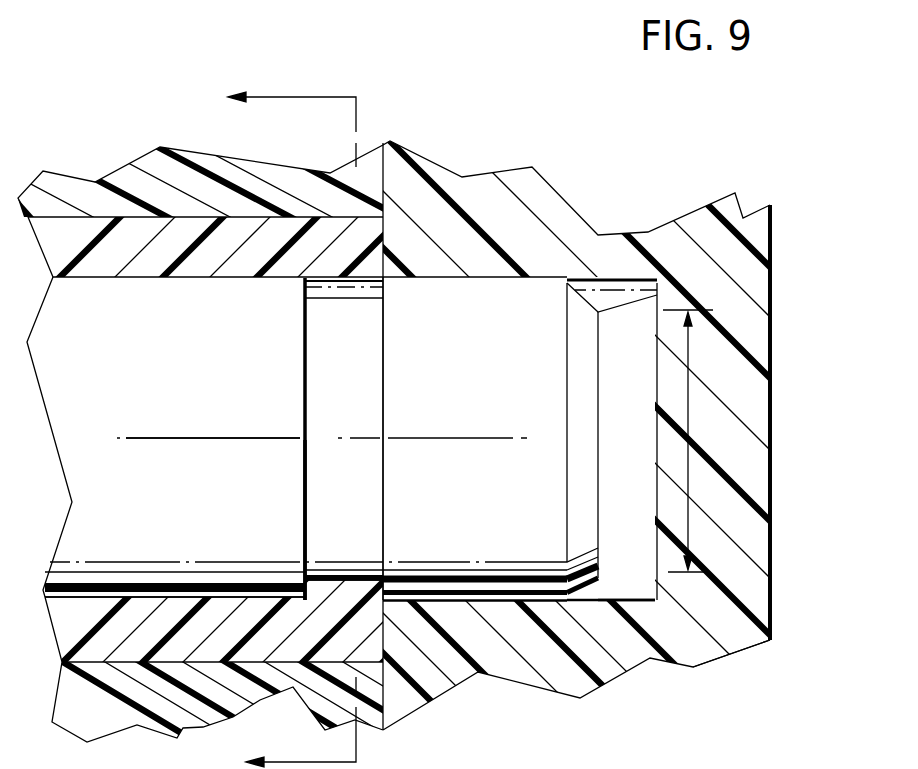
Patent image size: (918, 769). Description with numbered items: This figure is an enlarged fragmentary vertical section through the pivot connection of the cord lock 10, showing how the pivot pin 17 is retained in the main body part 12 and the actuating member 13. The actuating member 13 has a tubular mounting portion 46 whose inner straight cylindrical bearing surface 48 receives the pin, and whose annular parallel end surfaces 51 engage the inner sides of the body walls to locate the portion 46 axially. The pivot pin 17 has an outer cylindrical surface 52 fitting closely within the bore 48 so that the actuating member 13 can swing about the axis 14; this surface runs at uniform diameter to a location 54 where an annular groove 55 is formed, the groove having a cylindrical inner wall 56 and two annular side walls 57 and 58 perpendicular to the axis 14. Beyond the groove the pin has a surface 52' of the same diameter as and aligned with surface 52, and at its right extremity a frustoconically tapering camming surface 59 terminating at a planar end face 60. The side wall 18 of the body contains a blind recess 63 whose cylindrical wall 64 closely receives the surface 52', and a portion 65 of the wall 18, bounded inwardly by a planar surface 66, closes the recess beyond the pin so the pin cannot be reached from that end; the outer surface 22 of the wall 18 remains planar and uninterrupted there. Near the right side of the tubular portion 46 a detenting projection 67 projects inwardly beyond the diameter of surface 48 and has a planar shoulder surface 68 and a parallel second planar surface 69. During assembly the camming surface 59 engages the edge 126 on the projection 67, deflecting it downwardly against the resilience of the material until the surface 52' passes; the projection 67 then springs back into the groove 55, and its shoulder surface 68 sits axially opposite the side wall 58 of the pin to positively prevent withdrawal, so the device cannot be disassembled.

The cord lock 10 is at (292, 412).
The main body part 12 is at (778, 508).
The actuating member 13 is at (231, 214).
The axis 14 is at (170, 440).
The pivot pin 17 is at (205, 509).
The side wall 18 is at (750, 590).
The outer surface 22 is at (772, 565).
The tubular mounting portion 46 is at (107, 632).
The inner straight cylindrical bearing surface 48 is at (134, 218).
The end surfaces 51 is at (383, 227).
The outer cylindrical surface 52 is at (248, 236).
The surface 52' is at (475, 416).
The location 54 is at (300, 328).
The annular groove 55 is at (325, 428).
The inner wall 56 is at (337, 297).
The annular side wall 57 is at (393, 592).
The annular side wall 58 is at (380, 490).
The camming surface 59 is at (657, 292).
The end face 60 is at (600, 362).
The blind recess 63 is at (625, 472).
The cylindrical wall 64 is at (630, 600).
The portion 65 is at (737, 527).
The planar surface 66 is at (658, 385).
The detenting projection 67 is at (332, 598).
The shoulder surface 68 is at (310, 540).
The second planar surface 69 is at (293, 582).
The edge 126 is at (305, 541).